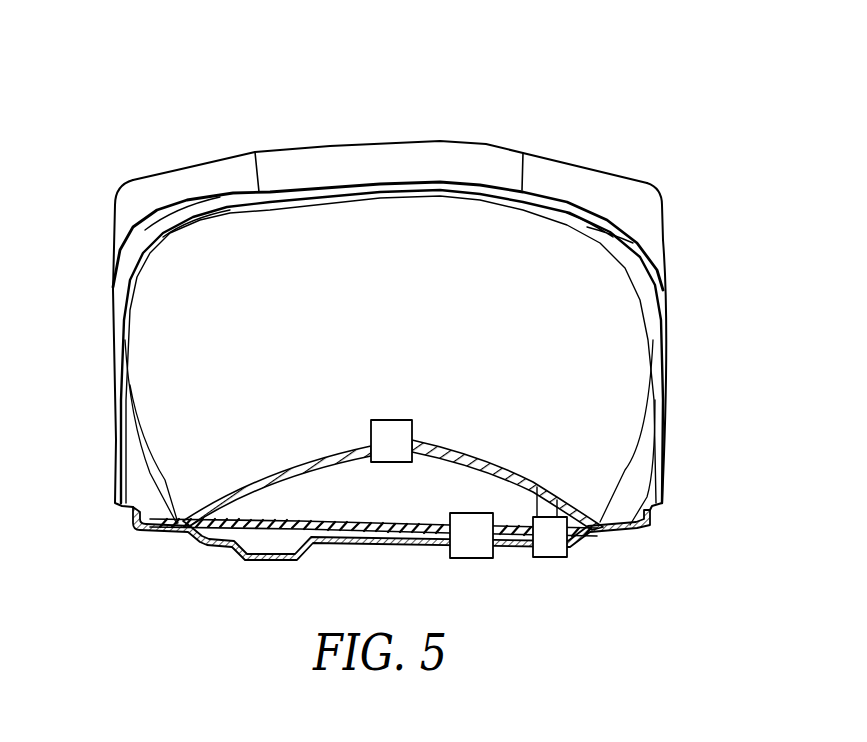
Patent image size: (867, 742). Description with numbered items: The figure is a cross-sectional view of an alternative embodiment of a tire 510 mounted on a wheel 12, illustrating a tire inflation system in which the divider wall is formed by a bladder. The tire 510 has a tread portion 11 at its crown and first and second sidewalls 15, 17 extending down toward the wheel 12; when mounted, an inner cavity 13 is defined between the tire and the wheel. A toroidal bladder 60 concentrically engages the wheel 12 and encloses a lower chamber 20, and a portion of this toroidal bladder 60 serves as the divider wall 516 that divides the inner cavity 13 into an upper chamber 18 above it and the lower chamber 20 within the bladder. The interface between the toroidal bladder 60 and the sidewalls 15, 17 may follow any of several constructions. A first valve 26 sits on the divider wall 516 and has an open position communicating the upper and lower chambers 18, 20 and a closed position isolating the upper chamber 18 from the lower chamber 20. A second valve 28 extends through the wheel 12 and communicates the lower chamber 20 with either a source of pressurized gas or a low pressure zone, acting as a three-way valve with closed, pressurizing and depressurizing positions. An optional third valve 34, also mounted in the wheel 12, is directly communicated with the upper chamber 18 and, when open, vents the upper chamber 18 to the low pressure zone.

The tread portion 11 is at (485, 153).
The tire 510 is at (650, 193).
The first sidewall 15 is at (668, 343).
The second sidewall 17 is at (120, 438).
The wheel 12 is at (270, 560).
The inner cavity 13 is at (388, 359).
The upper chamber 18 is at (332, 340).
The lower chamber 20 is at (362, 507).
The divider wall 516 is at (393, 453).
The toroidal bladder 60 is at (438, 445).
The first valve 26 is at (390, 418).
The second valve 28 is at (470, 558).
The third valve 34 is at (548, 558).